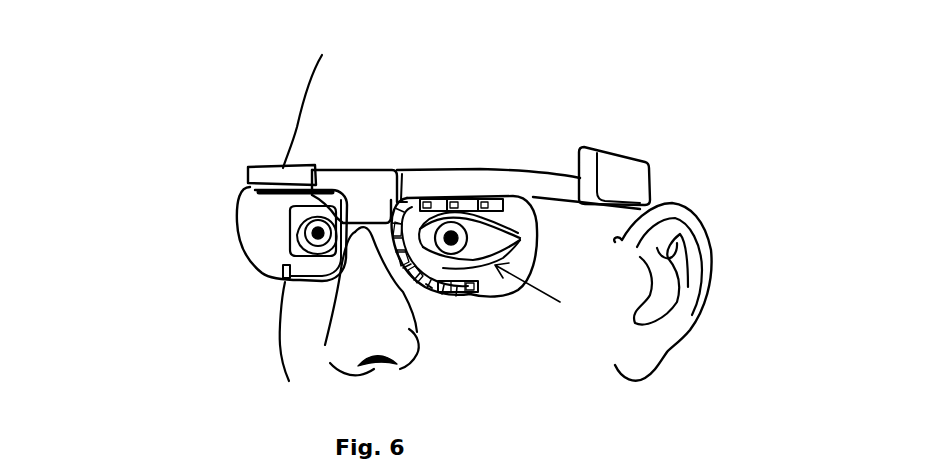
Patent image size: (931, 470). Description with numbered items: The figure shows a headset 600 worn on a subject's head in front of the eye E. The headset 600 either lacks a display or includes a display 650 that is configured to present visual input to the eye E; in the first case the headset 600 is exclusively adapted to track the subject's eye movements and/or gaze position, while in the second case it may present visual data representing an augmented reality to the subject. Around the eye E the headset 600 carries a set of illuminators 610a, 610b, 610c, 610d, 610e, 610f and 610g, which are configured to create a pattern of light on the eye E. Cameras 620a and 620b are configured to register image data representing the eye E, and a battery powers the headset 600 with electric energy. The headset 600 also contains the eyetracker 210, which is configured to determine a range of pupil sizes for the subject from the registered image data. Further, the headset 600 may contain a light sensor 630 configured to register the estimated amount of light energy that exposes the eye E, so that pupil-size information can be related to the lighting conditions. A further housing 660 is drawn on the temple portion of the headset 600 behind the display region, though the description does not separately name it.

The headset 600 is at (566, 119).
The eyetracker 210 is at (345, 188).
The light sensor 630 is at (395, 198).
The display 650 is at (517, 257).
The temple module housing 660 is at (622, 177).
The illuminator 610a is at (480, 200).
The illuminator 610b is at (452, 200).
The illuminator 610c is at (421, 200).
The illuminator 610d is at (397, 230).
The illuminator 610e is at (410, 253).
The illuminator 610f is at (415, 283).
The illuminator 610g is at (440, 293).
The camera 620a is at (427, 290).
The camera 620b is at (453, 290).
The eye E is at (560, 302).